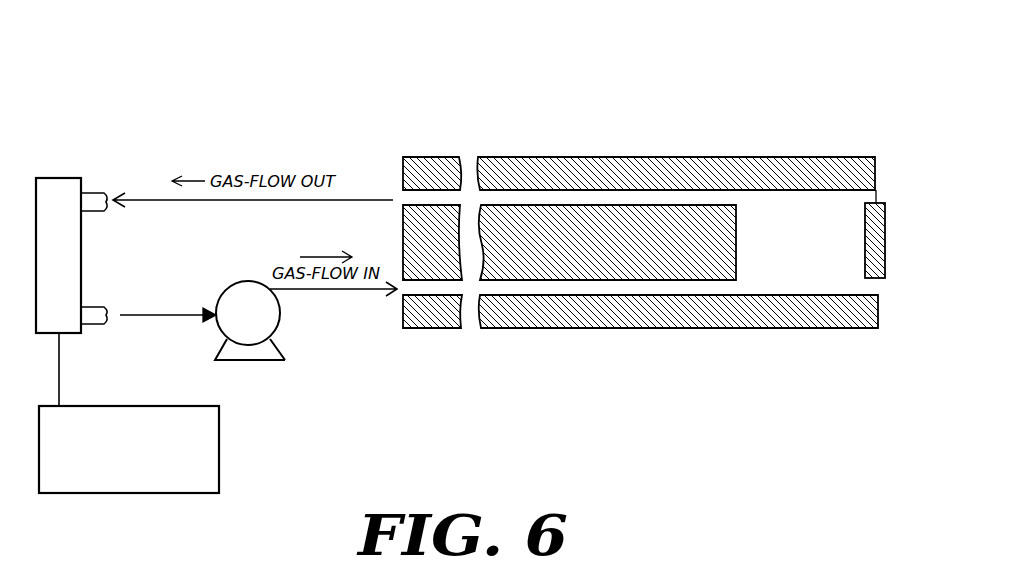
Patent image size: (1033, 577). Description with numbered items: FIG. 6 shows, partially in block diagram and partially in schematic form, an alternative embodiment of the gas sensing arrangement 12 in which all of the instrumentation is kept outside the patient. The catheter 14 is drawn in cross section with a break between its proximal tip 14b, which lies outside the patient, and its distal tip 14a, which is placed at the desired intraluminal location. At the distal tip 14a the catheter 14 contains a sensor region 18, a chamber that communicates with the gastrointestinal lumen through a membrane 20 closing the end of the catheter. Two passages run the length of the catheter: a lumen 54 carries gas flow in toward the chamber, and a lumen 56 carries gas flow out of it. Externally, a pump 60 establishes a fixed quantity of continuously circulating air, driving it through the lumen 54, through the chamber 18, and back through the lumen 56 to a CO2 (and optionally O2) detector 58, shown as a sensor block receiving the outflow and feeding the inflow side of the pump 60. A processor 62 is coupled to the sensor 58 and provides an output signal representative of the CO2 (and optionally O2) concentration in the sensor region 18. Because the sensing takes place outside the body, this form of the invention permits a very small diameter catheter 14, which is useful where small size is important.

The gas sensor 12 is at (818, 62).
The catheter 14 is at (632, 232).
The distal tip 14a is at (870, 133).
The proximal tip 14b is at (433, 134).
The sensor region 18 is at (782, 272).
The membrane 20 is at (877, 278).
The lumen 54 is at (688, 287).
The lumen 56 is at (604, 192).
The detector 58 is at (81, 270).
The pump 60 is at (240, 281).
The processor 62 is at (219, 437).